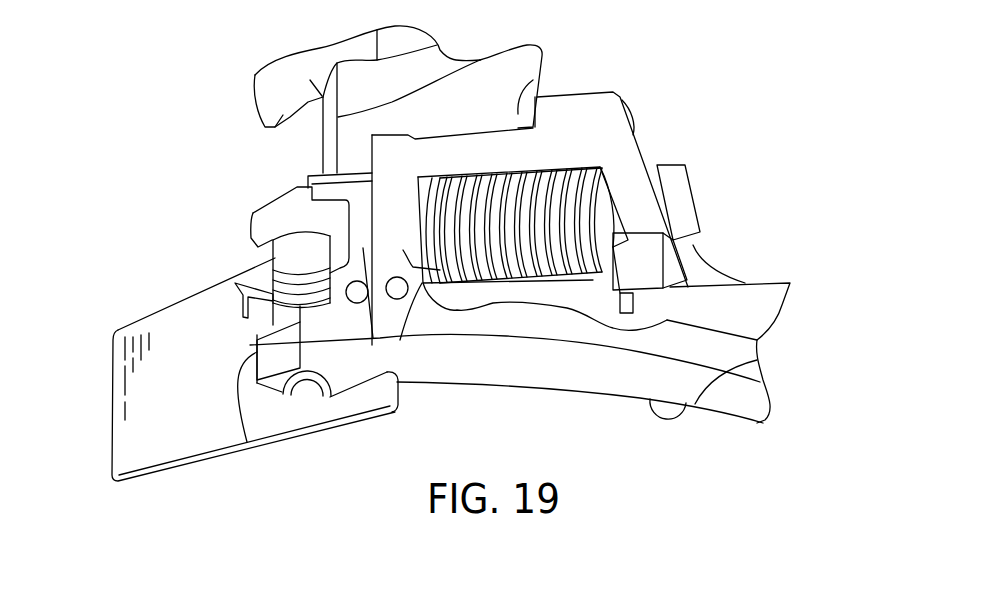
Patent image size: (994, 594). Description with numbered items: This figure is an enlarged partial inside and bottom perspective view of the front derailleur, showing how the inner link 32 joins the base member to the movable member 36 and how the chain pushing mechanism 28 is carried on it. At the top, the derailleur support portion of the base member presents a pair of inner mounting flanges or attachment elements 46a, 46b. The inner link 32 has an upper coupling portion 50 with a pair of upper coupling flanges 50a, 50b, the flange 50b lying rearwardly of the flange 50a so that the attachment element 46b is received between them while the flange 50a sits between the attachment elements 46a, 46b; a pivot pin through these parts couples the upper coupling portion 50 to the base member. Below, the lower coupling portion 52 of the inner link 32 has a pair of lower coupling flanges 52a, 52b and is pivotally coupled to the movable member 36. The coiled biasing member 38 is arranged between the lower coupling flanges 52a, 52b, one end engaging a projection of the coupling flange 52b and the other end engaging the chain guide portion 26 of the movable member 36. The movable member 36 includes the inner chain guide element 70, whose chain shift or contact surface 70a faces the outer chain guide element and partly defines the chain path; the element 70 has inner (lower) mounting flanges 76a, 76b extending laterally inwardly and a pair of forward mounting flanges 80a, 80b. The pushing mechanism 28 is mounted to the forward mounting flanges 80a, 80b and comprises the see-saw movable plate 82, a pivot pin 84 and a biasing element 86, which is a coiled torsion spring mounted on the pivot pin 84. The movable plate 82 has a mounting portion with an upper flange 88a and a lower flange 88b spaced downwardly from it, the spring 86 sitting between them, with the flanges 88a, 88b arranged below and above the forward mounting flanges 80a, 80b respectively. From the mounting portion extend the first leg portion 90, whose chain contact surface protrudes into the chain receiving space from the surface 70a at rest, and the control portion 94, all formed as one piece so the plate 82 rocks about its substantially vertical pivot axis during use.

The chain guide portion 26 is at (766, 277).
The pushing mechanism 28 is at (212, 221).
The inner link 32 is at (644, 145).
The movable member 36 is at (758, 249).
The biasing member 38 is at (518, 285).
The inner mounting flange 46a is at (352, 150).
The inner mounting flange 46b is at (541, 76).
The upper coupling portion 50 is at (601, 128).
The upper coupling flange 50a is at (397, 143).
The upper coupling flange 50b is at (602, 107).
The lower coupling portion 52 is at (640, 186).
The lower coupling flange 52a is at (418, 263).
The lower coupling flange 52b is at (693, 245).
The inner chain guide element 70 is at (737, 397).
The chain shift surface 70a is at (758, 366).
The inner mounting flange 76a is at (365, 332).
The inner mounting flange 76b is at (700, 245).
The forward mounting flange 80a is at (253, 215).
The forward mounting flange 80b is at (247, 442).
The movable plate 82 is at (133, 490).
The pivot pin 84 is at (308, 400).
The biasing element 86 is at (227, 308).
The upper flange 88a is at (290, 254).
The lower flange 88b is at (283, 322).
The first leg portion 90 is at (150, 386).
The control portion 94 is at (384, 416).